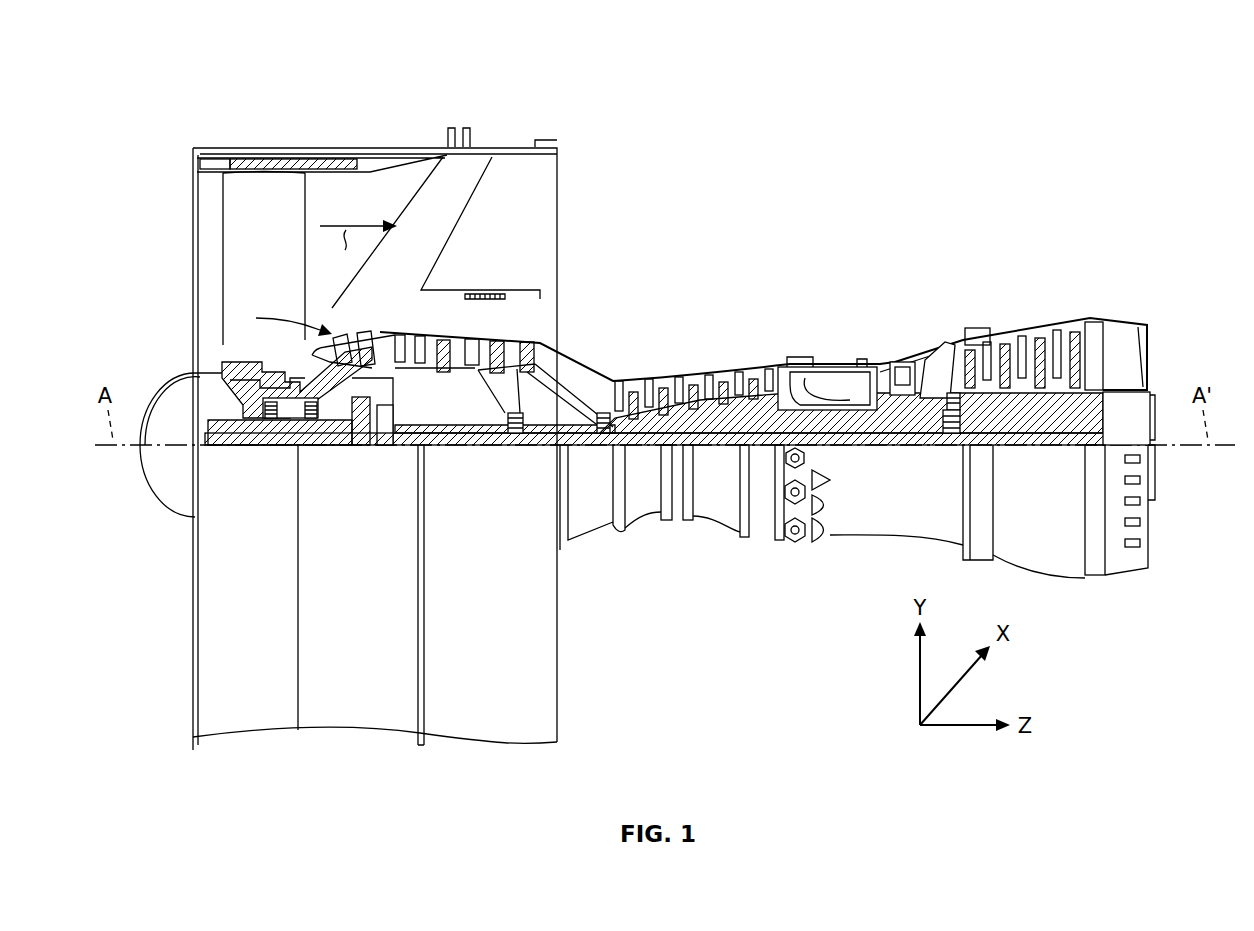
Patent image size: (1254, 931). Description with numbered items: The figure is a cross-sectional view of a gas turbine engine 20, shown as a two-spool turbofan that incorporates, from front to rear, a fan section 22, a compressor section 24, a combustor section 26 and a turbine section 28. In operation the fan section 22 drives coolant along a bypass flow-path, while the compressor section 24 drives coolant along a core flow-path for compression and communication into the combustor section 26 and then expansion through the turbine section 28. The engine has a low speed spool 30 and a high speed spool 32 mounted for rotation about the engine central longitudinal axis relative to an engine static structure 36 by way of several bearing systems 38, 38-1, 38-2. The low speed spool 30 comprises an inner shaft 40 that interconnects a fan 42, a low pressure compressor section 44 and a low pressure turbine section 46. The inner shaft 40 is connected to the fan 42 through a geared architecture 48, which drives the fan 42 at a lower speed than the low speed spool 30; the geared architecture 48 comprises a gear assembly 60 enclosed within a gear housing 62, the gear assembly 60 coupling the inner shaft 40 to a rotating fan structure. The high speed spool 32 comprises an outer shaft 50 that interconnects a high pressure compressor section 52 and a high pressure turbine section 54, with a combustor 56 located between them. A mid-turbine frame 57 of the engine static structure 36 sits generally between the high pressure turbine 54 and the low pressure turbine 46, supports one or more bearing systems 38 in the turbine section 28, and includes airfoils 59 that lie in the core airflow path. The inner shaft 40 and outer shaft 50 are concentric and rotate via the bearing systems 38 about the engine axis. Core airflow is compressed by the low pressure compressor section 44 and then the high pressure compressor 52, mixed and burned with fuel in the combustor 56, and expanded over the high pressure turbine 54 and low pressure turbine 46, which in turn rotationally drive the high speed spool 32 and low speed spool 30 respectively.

The gas turbine engine 20 is at (884, 175).
The fan section 22 is at (420, 128).
The compressor section 24 is at (425, 252).
The combustor section 26 is at (785, 252).
The turbine section 28 is at (1090, 252).
The low speed spool 30 is at (720, 462).
The high speed spool 32 is at (757, 413).
The engine static structure 36 is at (355, 712).
The bearing system 38 is at (940, 445).
The bearing system 38-1 is at (277, 420).
The bearing system 38-2 is at (518, 433).
The inner shaft 40 is at (580, 450).
The fan 42 is at (275, 270).
The low pressure compressor section 44 is at (497, 345).
The low pressure turbine section 46 is at (1025, 350).
The geared architecture 48 is at (386, 465).
The outer shaft 50 is at (818, 448).
The high pressure compressor section 52 is at (700, 410).
The high pressure turbine section 54 is at (900, 365).
The combustor 56 is at (830, 385).
The mid-turbine frame 57 is at (935, 360).
The airfoils 59 is at (942, 348).
The gear assembly 60 is at (392, 427).
The gear housing 62 is at (390, 398).